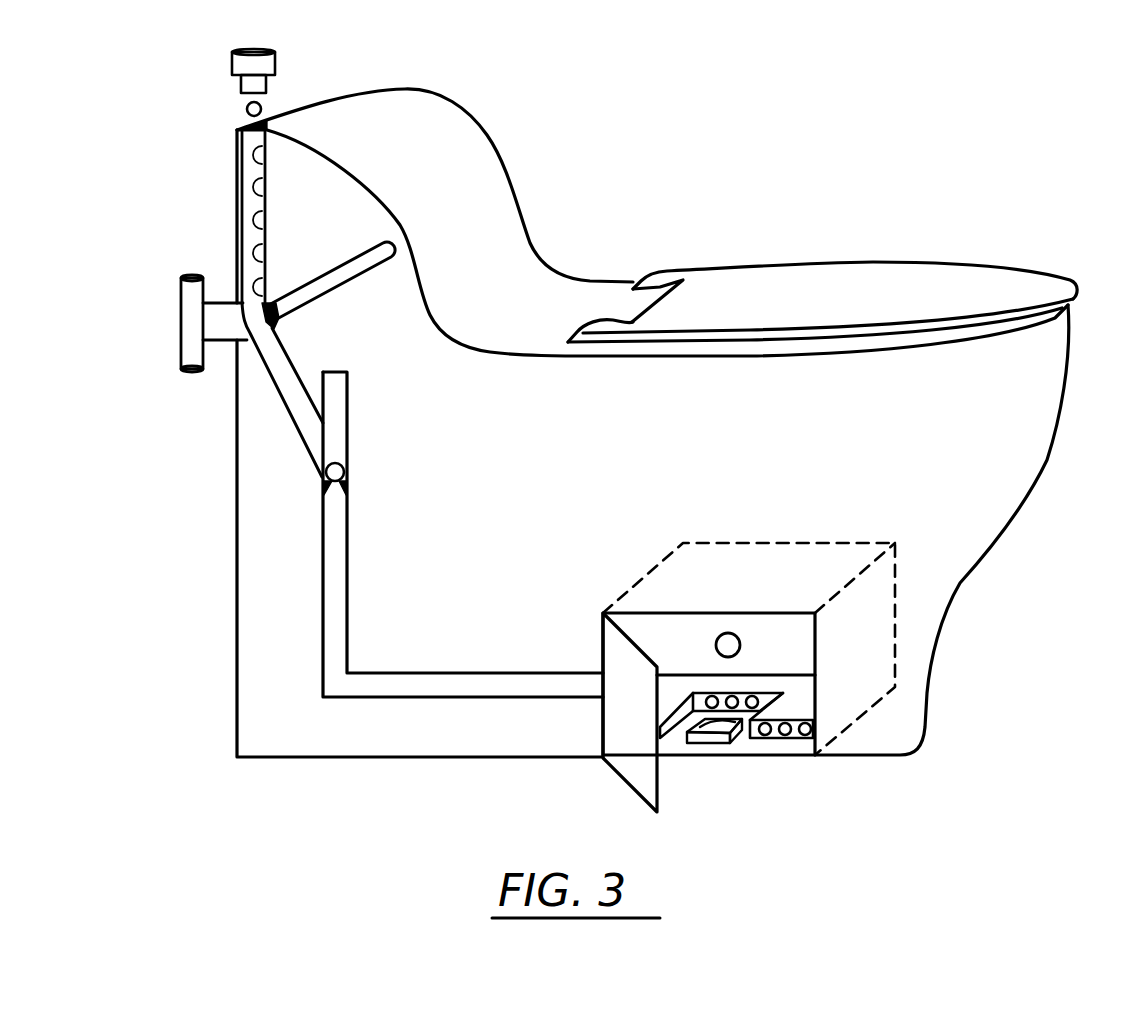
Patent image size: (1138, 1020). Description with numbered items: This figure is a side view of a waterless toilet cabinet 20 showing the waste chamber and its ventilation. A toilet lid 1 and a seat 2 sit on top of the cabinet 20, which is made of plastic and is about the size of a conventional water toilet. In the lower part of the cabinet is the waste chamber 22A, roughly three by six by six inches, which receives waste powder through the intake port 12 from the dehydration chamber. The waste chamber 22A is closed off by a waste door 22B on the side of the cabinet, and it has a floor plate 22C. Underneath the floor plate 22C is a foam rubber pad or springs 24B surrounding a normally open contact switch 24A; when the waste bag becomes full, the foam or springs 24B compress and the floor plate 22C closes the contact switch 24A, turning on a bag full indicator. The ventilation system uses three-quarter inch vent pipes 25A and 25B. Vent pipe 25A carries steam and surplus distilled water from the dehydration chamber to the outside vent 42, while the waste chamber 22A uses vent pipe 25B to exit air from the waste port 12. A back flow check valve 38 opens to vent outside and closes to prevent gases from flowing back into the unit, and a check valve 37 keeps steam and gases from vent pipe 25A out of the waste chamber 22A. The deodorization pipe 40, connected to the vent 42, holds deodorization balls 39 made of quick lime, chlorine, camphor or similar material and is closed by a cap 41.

The toilet lid 1 is at (1030, 270).
The seat 2 is at (1062, 309).
The toilet cabinet 20 is at (1021, 456).
The waste powder intake port 12 is at (740, 646).
The waste chamber 22A is at (876, 668).
The waste door 22B is at (652, 733).
The floor plate 22C is at (686, 650).
The normally open contact switch 24A is at (720, 743).
The foam rubber pad or springs 24B is at (793, 711).
The vent pipe 25A is at (383, 266).
The vent pipe 25B is at (387, 672).
The check valve 37 is at (345, 470).
The back flow check valve 38 is at (274, 315).
The deodorization balls 39 is at (247, 108).
The deodorization pipe 40 is at (267, 207).
The cap 41 is at (232, 66).
The vent 42 is at (180, 303).